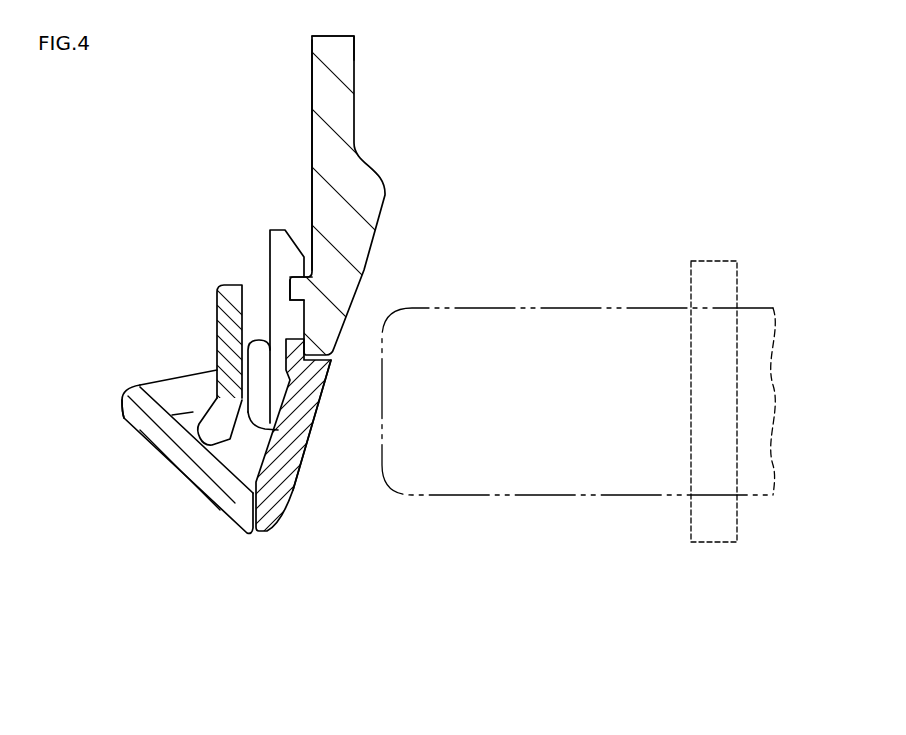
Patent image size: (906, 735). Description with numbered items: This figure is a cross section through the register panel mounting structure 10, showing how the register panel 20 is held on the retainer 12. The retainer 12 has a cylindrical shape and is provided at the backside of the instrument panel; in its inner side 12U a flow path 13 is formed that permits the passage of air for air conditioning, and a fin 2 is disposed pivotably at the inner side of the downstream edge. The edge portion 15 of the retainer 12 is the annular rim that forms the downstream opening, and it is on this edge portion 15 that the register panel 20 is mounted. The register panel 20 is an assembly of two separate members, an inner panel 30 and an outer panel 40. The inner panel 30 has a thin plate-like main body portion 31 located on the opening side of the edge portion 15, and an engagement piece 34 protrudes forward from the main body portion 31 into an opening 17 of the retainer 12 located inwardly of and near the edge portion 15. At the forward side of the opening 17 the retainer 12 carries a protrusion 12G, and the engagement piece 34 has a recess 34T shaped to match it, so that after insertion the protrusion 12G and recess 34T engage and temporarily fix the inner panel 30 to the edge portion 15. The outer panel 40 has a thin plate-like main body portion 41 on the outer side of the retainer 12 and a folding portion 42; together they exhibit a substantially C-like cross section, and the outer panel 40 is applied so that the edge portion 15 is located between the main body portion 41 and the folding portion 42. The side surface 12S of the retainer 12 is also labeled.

The fin 2 is at (582, 308).
The register panel mounting structure 10 is at (368, 512).
The retainer 12 is at (333, 70).
The inner side of the retainer 12U is at (354, 86).
The side surface of housing 12S is at (312, 130).
The protrusion 12G is at (290, 290).
The flow path 13 is at (666, 208).
The edge portion 15 is at (187, 397).
The opening 17 is at (272, 331).
The register panel 20 is at (337, 576).
The inner panel 30 is at (293, 494).
The main body portion 31 is at (295, 430).
The engagement piece 34 is at (287, 257).
The recess 34T is at (294, 288).
The outer panel 40 is at (186, 494).
The main body portion 41 is at (192, 465).
The folding portion 42 is at (123, 407).